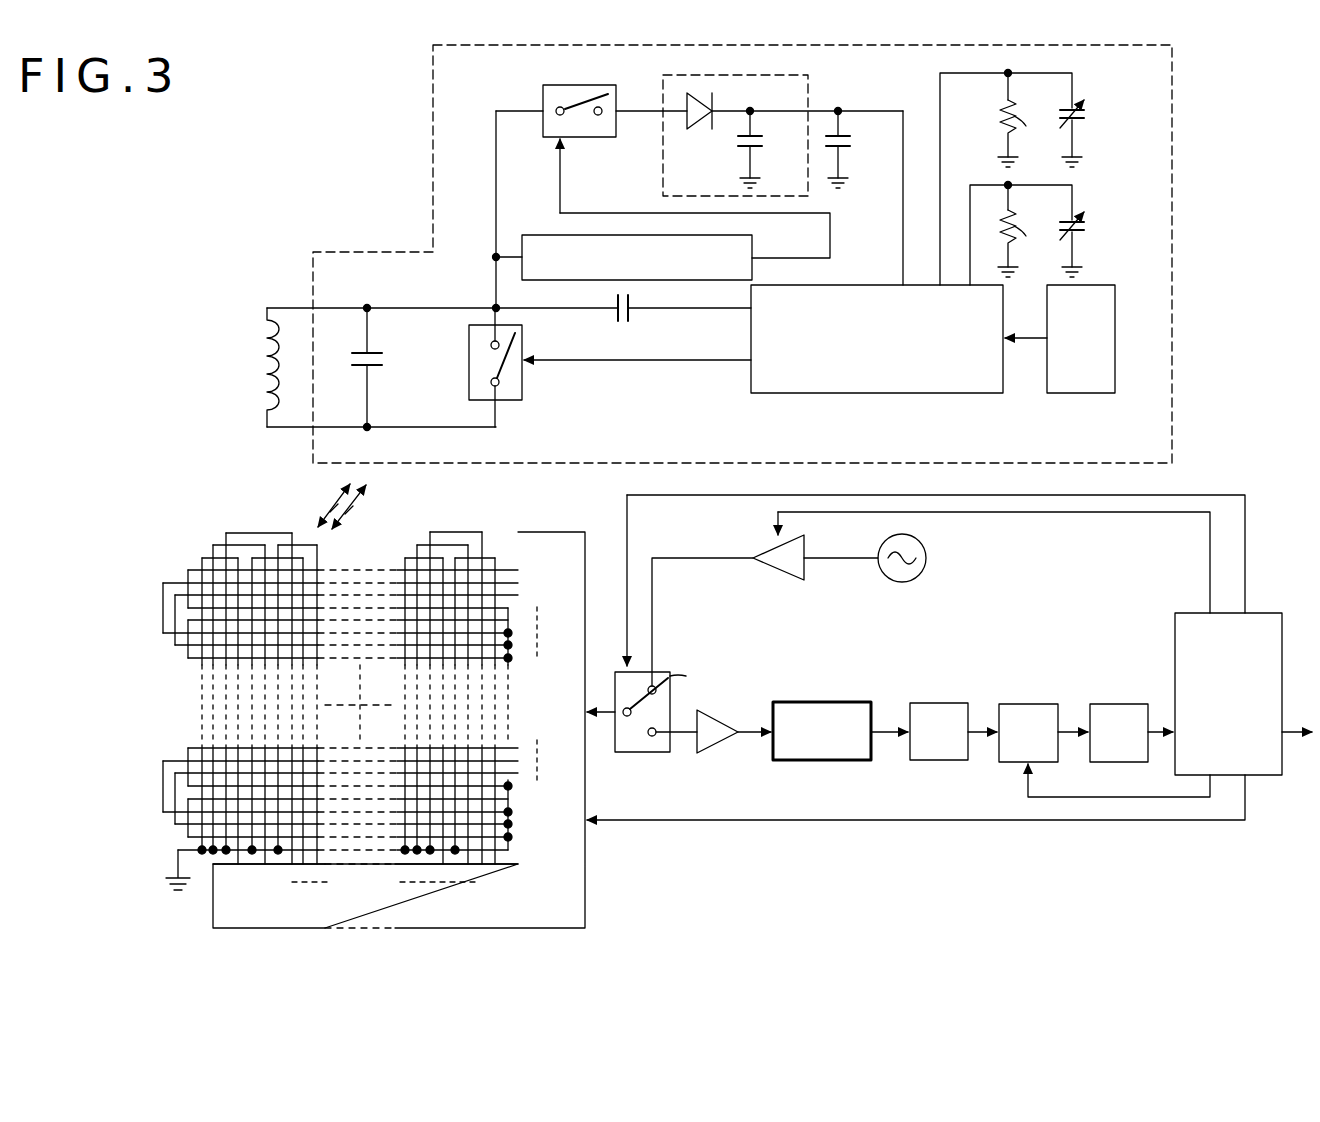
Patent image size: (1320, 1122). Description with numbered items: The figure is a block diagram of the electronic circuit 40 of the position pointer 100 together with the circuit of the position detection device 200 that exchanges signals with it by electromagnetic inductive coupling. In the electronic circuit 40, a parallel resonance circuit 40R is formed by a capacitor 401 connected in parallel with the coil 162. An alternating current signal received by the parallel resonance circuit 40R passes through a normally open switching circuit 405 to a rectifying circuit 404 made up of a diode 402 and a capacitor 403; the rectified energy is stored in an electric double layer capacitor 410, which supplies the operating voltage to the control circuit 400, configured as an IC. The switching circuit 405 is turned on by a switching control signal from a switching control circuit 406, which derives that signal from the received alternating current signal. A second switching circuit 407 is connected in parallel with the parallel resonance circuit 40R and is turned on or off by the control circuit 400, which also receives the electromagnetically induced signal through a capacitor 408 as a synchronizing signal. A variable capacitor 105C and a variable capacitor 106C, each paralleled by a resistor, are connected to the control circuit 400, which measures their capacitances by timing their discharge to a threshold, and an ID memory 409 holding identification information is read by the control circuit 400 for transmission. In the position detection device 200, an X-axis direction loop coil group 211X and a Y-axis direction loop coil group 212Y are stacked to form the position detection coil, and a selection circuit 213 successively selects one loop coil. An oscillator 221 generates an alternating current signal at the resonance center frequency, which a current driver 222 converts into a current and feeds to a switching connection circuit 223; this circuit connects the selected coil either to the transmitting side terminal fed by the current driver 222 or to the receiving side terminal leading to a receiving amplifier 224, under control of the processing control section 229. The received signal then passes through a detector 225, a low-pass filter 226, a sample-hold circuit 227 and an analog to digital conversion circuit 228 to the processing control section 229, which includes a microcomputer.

The position pointer 100 is at (282, 102).
The electronic circuit 40 is at (433, 170).
The parallel resonance circuit 40R is at (360, 414).
The coil 162 is at (258, 366).
The capacitor 401 is at (383, 358).
The diode 402 is at (700, 128).
The capacitor 403 is at (763, 142).
The rectifying circuit 404 is at (663, 144).
The switching circuit 405 is at (545, 137).
The switching control circuit 406 is at (752, 250).
The switching circuit 407 is at (522, 394).
The capacitor 408 is at (625, 322).
The ID memory 409 is at (1077, 393).
The electric double layer capacitor 410 is at (851, 142).
The control circuit 400 is at (793, 393).
The variable capacitor 105C is at (1084, 114).
The variable capacitor 106C is at (1084, 226).
The position detection device 200 is at (782, 922).
The X-axis direction loop coil group 211X is at (444, 532).
The Y-axis direction loop coil group 212Y is at (163, 772).
The selection circuit 213 is at (540, 532).
The oscillator 221 is at (926, 558).
The current driver 222 is at (776, 570).
The switching connection circuit 223 is at (632, 752).
The receiving amplifier 224 is at (718, 753).
The detector 225 is at (795, 702).
The low-pass filter 226 is at (925, 703).
The sample-hold circuit 227 is at (1015, 704).
The analog to digital conversion circuit 228 is at (1103, 704).
The processing control section 229 is at (1272, 613).